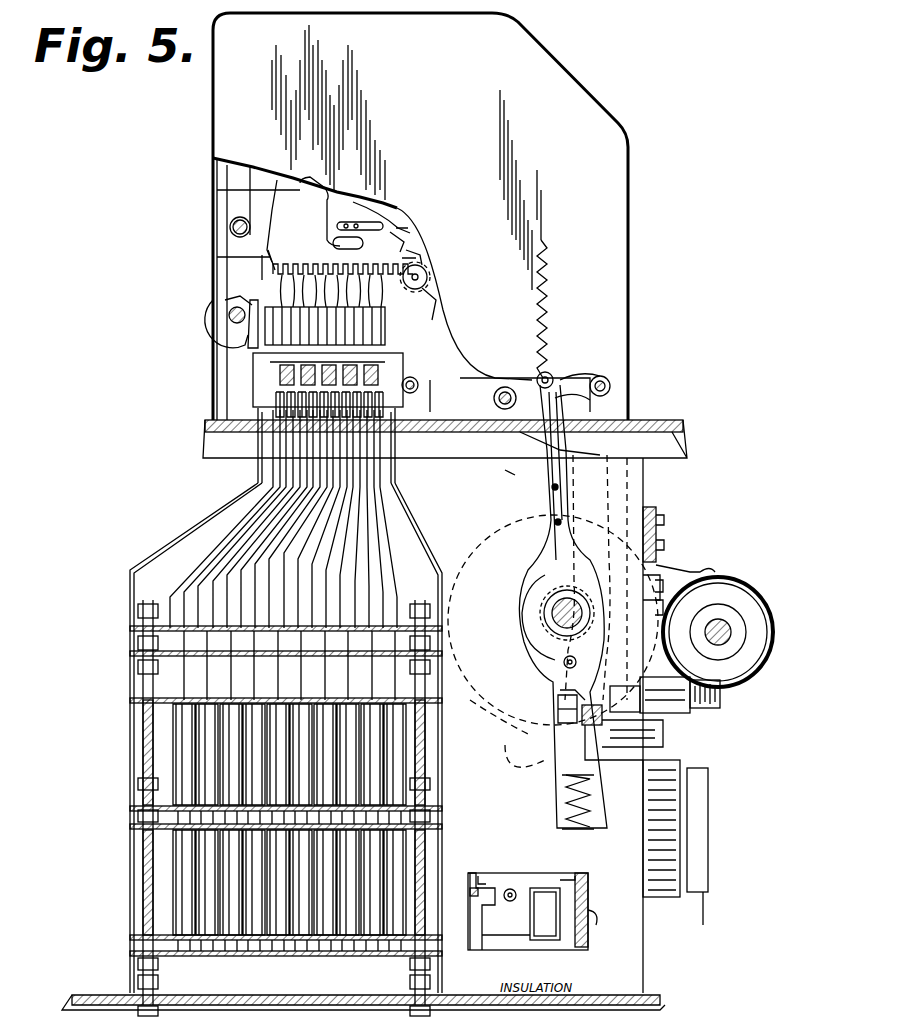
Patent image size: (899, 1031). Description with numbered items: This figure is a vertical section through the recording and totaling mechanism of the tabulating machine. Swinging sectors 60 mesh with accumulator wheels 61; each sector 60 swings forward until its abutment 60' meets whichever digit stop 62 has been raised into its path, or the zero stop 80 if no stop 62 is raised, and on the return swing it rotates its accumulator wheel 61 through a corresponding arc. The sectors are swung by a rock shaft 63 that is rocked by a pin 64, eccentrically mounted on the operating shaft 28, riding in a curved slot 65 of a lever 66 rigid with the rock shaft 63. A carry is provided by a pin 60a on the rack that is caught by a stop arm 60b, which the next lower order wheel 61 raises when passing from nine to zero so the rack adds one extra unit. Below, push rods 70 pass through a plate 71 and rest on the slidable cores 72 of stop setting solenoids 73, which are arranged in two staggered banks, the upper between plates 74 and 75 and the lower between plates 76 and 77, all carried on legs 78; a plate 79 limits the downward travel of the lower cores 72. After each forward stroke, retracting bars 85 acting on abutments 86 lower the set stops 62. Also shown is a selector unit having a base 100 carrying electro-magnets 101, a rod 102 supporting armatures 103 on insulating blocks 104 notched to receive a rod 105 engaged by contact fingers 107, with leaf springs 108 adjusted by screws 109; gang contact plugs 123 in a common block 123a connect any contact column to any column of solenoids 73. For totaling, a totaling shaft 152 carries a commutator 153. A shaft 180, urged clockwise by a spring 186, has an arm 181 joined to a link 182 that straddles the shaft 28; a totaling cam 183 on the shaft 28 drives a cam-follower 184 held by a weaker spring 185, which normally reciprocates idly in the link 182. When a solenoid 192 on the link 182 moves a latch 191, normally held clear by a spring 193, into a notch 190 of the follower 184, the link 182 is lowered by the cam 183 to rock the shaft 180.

The operating shaft 28 is at (552, 615).
The swinging sector 60 is at (346, 269).
The abutment 60' is at (219, 258).
The pin 60a is at (418, 252).
The stop arm 60b is at (395, 237).
The accumulator wheel 61 is at (430, 276).
The stop 62 is at (340, 290).
The rock shaft 63 is at (494, 398).
The pin 64 is at (535, 758).
The curved slot 65 is at (508, 745).
The lever 66 is at (528, 440).
The push rod 70 is at (250, 515).
The plate 71 is at (140, 636).
The slidable core 72 is at (185, 700).
The solenoid 73 is at (182, 735).
The plate 74 is at (140, 664).
The plate 75 is at (150, 808).
The plate 76 is at (140, 828).
The plate 77 is at (140, 950).
The leg 78 is at (430, 798).
The plate 79 is at (256, 955).
The zero stop 80 is at (290, 271).
The retracting bar 85 is at (270, 366).
The abutment 86 is at (262, 396).
The base 100 is at (520, 952).
The electro-magnet 101 is at (540, 922).
The rod 102 is at (512, 890).
The armature 103 is at (568, 878).
The block of insulating material 104 is at (490, 935).
The rod 105 is at (478, 880).
The electrical contact finger 107 is at (470, 892).
The leaf spring 108 is at (588, 903).
The adjusting screw 109 is at (596, 928).
The gang contact plug 123 is at (684, 810).
The common block 123a is at (700, 840).
The totaling shaft 152 is at (722, 602).
The totaling commutator 153 is at (722, 630).
The shaft 180 is at (605, 384).
The arm 181 is at (552, 376).
The link 182 is at (545, 478).
The totaling cam 183 is at (548, 580).
The cam-follower 184 is at (563, 662).
The spring 185 is at (582, 822).
The spring 186 is at (548, 312).
The notch 190 is at (558, 702).
The latch 191 is at (640, 740).
The solenoid 192 is at (685, 712).
The spring 193 is at (720, 700).